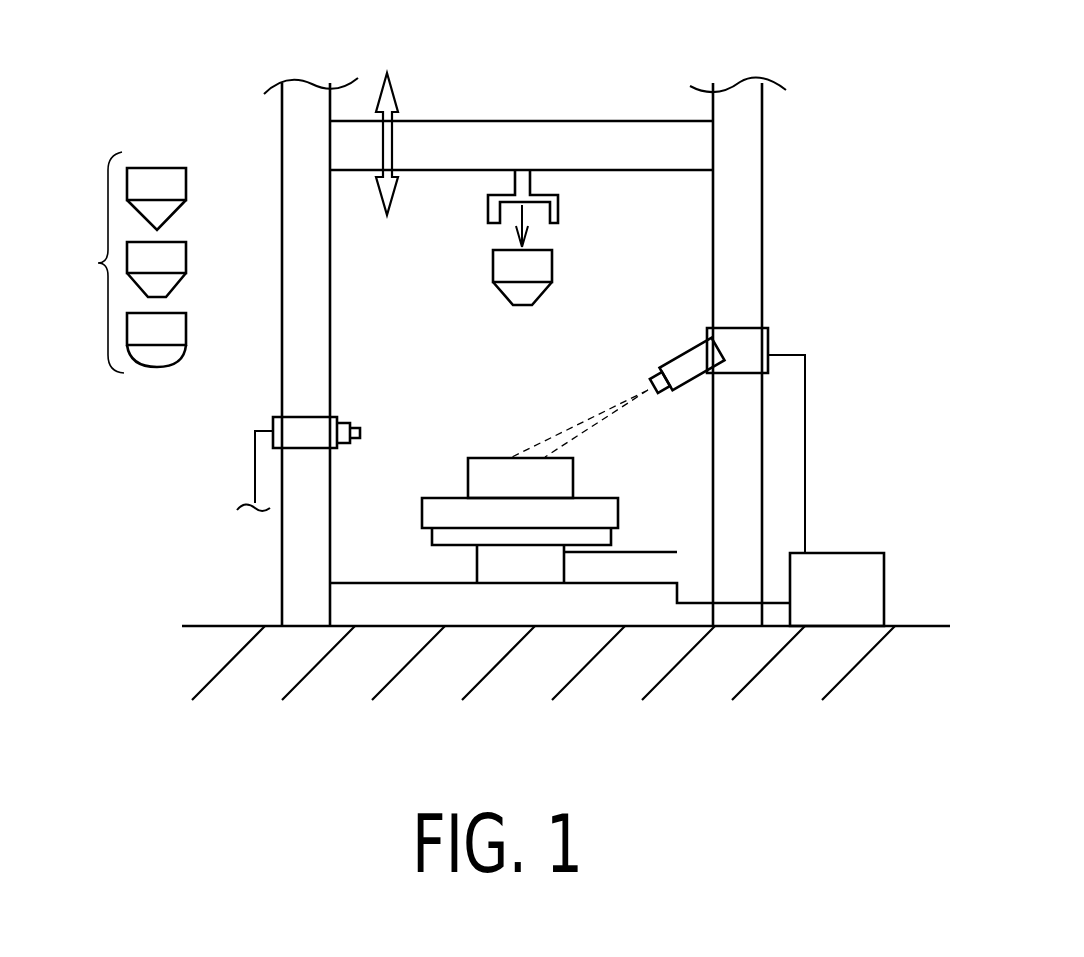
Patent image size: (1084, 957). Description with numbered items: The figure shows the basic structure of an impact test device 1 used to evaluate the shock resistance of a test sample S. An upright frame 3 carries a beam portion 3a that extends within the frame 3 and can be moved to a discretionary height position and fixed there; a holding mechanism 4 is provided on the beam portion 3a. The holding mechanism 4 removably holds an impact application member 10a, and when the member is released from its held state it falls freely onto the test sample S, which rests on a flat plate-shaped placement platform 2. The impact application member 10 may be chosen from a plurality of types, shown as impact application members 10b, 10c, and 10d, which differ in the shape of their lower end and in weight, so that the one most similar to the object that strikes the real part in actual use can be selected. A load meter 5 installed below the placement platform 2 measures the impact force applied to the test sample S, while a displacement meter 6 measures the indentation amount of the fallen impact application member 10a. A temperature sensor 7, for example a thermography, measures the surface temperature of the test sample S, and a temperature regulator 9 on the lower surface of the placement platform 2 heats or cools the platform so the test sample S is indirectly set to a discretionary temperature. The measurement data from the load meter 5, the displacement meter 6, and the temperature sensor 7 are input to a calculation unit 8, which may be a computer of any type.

The impact test device 1 is at (606, 110).
The placement platform 2 is at (450, 508).
The frame 3 is at (768, 200).
The beam portion 3a is at (500, 135).
The holding mechanism 4 is at (488, 198).
The load meter 5 is at (480, 568).
The displacement meter 6 is at (343, 427).
The temperature sensor 7 is at (690, 357).
The calculation unit 8 is at (845, 560).
The temperature regulator 9 is at (620, 543).
The impact application member 10 is at (98, 263).
The impact application member 10a is at (545, 268).
The impact application member 10b is at (180, 190).
The impact application member 10c is at (180, 262).
The impact application member 10d is at (180, 333).
The test sample S is at (488, 465).